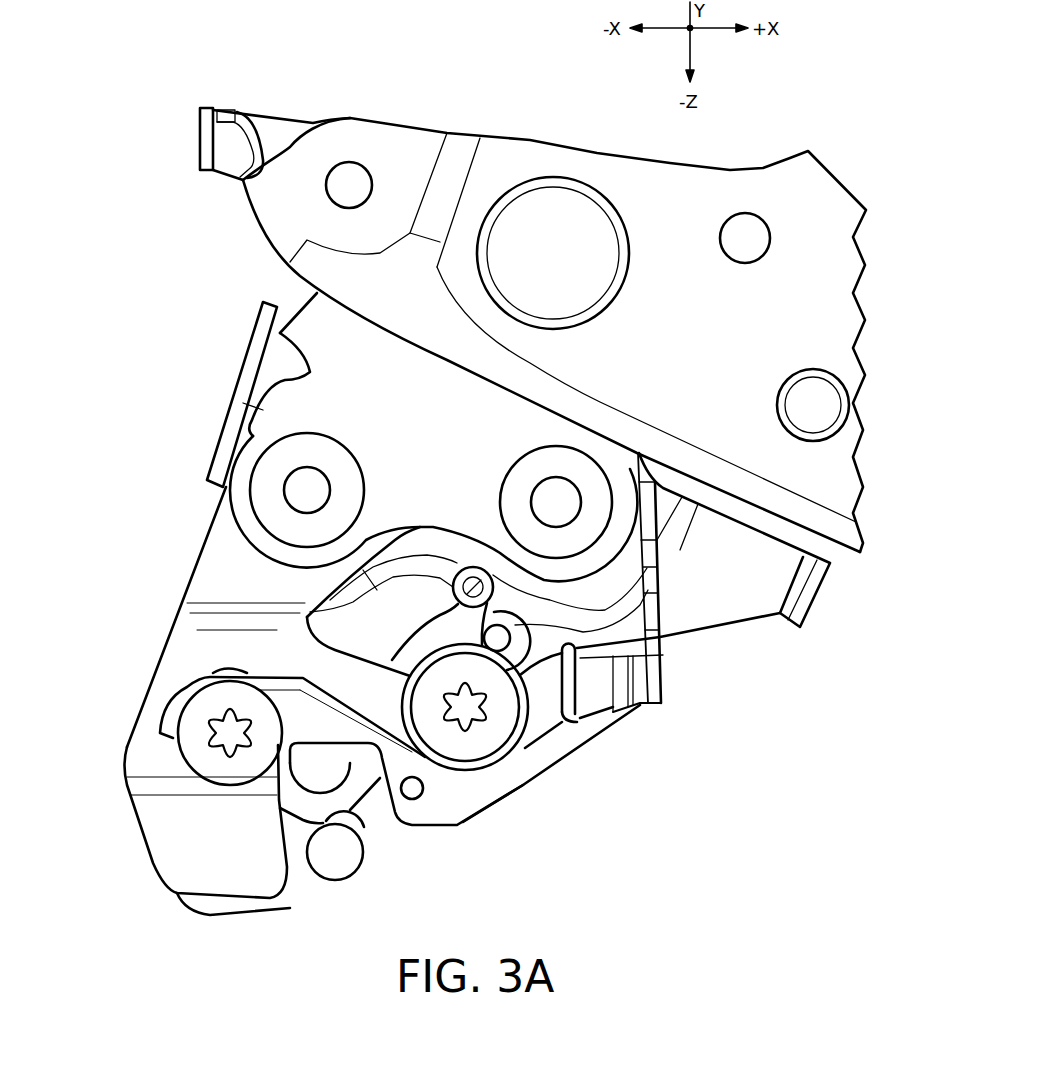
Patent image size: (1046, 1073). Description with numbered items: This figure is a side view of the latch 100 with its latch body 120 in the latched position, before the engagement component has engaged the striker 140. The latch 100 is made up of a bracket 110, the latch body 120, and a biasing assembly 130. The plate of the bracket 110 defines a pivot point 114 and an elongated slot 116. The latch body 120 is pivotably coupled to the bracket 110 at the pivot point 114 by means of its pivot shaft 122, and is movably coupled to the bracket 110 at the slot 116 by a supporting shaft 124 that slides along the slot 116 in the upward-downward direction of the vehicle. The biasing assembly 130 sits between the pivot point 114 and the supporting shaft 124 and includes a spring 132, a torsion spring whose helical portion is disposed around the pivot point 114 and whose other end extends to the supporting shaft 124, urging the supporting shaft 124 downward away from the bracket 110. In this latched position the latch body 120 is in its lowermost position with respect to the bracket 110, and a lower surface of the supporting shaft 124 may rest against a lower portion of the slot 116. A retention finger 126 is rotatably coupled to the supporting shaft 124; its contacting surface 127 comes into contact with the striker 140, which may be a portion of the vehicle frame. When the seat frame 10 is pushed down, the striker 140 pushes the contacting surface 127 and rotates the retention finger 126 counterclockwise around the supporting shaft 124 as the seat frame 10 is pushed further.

The seat frame 10 is at (570, 305).
The latch 100 is at (499, 546).
The bracket 110 is at (444, 663).
The pivot point 114 is at (510, 799).
The slot 116 is at (233, 670).
The latch body 120 is at (225, 889).
The pivot shaft 122 is at (470, 740).
The supporting shaft 124 is at (226, 777).
The retention finger 126 is at (293, 903).
The contacting surface 127 is at (364, 830).
The biasing assembly 130 is at (386, 601).
The spring 132 is at (558, 720).
The striker 140 is at (330, 773).